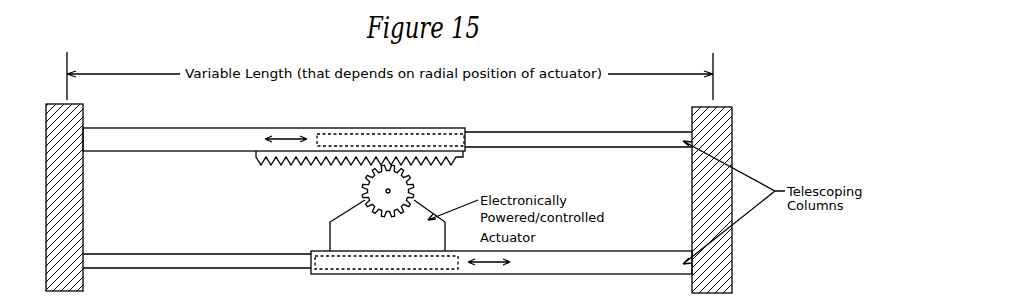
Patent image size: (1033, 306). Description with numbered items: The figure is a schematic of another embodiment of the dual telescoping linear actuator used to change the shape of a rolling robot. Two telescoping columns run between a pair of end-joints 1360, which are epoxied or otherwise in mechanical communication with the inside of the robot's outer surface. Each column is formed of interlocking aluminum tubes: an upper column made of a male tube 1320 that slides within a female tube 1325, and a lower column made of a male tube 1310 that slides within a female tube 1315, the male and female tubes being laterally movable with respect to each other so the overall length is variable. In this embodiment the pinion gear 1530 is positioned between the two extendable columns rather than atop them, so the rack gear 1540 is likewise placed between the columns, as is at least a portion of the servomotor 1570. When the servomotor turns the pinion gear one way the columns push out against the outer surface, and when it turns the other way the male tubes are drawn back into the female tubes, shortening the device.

The end-joint 1360 is at (72, 104).
The female aluminum tube 1325 is at (182, 128).
The male aluminum tube 1320 is at (563, 132).
The rack gear 1540 is at (447, 163).
The pinion gear 1530 is at (362, 186).
The servomotor 1570 is at (330, 222).
The male aluminum tube 1310 is at (178, 254).
The female aluminum tube 1315 is at (620, 251).